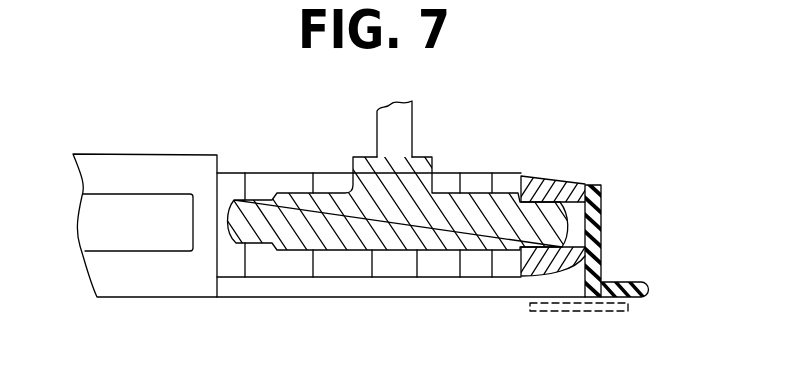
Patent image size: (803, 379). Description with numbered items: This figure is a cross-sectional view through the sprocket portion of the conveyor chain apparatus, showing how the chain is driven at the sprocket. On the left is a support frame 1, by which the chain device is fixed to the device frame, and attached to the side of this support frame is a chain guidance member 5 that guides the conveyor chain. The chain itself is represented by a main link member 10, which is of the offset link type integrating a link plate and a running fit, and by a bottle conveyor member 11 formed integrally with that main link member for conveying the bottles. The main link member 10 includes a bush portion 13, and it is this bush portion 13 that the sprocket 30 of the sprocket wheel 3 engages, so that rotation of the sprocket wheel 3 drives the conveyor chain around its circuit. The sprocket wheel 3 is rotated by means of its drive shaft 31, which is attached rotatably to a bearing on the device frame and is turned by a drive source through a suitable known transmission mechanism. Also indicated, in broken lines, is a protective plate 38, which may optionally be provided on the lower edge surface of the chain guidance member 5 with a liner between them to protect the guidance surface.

The support frame 1 is at (146, 252).
The sprocket wheel 3 is at (478, 191).
The chain guidance member 5 is at (138, 156).
The main link member 10 is at (598, 210).
The bottle conveyor member 11 is at (603, 235).
The bush portion 13 is at (550, 166).
The sprocket 30 is at (540, 172).
The drive shaft 31 is at (413, 130).
The protective plate 38 is at (628, 306).